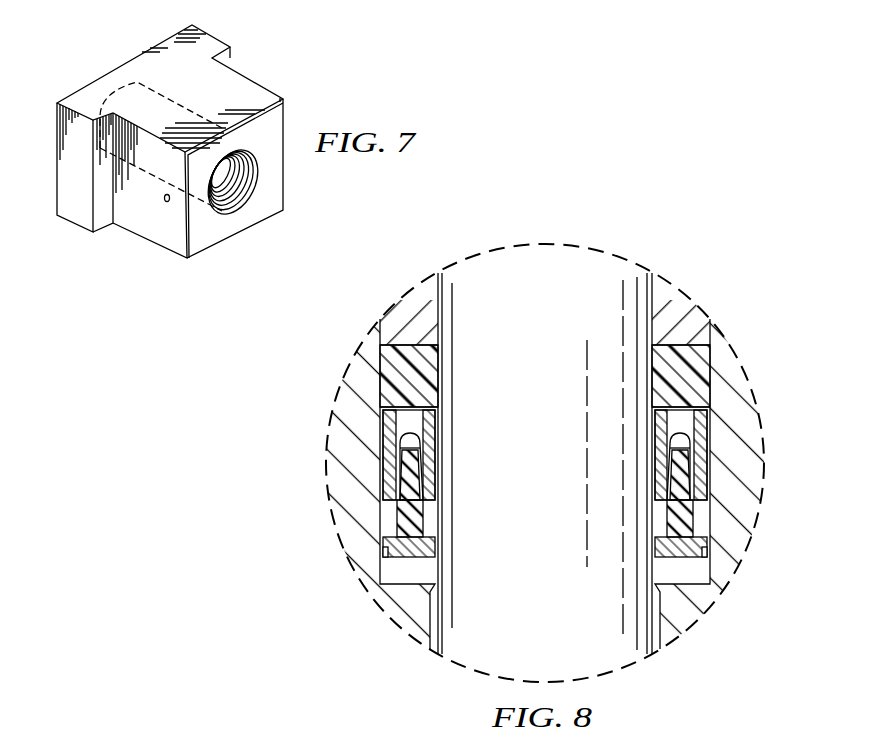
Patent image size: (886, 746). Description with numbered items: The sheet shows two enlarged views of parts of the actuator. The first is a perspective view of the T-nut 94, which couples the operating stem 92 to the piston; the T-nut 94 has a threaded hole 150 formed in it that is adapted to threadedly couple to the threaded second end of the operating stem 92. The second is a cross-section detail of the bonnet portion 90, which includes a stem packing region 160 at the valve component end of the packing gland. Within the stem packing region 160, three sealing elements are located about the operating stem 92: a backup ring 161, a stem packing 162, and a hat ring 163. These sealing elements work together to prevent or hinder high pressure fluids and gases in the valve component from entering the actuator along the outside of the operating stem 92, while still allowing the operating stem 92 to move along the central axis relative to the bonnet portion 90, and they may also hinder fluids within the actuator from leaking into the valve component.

In FIG. 7, the T-nut 94 is at (182, 141).
In FIG. 7, the threaded hole 150 is at (232, 198).
In FIG. 8, the bonnet portion 90 is at (345, 462).
In FIG. 8, the operating stem 92 is at (537, 474).
In FIG. 8, the stem packing region 160 is at (602, 489).
In FIG. 8, the backup ring 161 is at (703, 355).
In FIG. 8, the stem packing 162 is at (697, 441).
In FIG. 8, the hat ring 163 is at (710, 563).